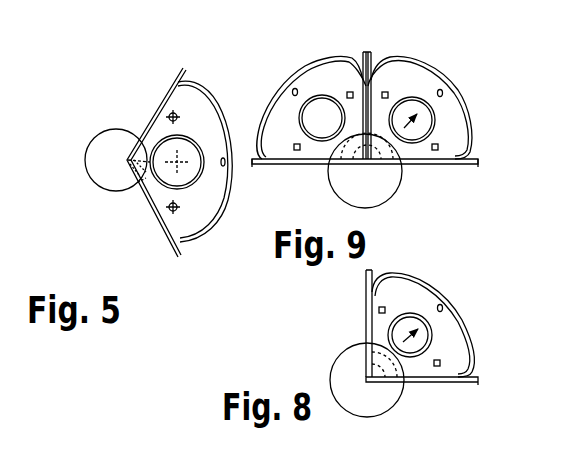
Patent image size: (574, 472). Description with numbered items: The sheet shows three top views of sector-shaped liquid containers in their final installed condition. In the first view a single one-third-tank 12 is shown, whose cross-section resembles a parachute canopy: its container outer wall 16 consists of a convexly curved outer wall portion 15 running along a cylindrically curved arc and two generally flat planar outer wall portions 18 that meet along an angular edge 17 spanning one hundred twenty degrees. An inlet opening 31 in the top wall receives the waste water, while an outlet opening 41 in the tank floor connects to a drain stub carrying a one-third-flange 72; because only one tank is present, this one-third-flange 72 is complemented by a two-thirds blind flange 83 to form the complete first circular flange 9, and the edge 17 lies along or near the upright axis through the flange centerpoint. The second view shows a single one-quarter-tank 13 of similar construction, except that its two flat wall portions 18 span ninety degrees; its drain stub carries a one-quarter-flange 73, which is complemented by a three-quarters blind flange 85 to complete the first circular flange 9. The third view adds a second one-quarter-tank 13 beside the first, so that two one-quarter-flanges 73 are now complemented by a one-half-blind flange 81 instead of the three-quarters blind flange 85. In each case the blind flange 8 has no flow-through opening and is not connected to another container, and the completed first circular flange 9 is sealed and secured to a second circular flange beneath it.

In FIG. 8, the blind flange 8 is at (390, 402).
In FIG. 8, the first circular flange 9 is at (348, 398).
In FIG. 5, the one-third-tank 12 is at (188, 225).
In FIG. 5, the one-quarter-tank 13 is at (205, 161).
In FIG. 9, the one-quarter-tank 13 is at (337, 83).
In FIG. 8, the one-quarter-tank 13 is at (413, 300).
In FIG. 5, the convexly curved outer wall portion 15 is at (222, 203).
In FIG. 9, the convexly curved outer wall portion 15 is at (487, 63).
In FIG. 8, the convexly curved outer wall portion 15 is at (457, 322).
In FIG. 5, the container outer wall 16 is at (155, 110).
In FIG. 9, the container outer wall 16 is at (283, 93).
In FIG. 8, the container outer wall 16 is at (367, 318).
In FIG. 5, the angular edge 17 is at (126, 158).
In FIG. 8, the angular edge 17 is at (362, 382).
In FIG. 5, the flat planar outer wall portion 18 is at (142, 178).
In FIG. 8, the flat planar outer wall portion 18 is at (399, 358).
In FIG. 5, the inlet opening 31 is at (185, 154).
In FIG. 9, the inlet opening 31 is at (420, 128).
In FIG. 8, the inlet opening 31 is at (432, 343).
In FIG. 5, the outlet opening 41 is at (143, 187).
In FIG. 9, the outlet opening 41 is at (337, 160).
In FIG. 8, the outlet opening 41 is at (380, 368).
In FIG. 5, the one-third-flange 72 is at (137, 187).
In FIG. 9, the one-quarter-flange 73 is at (322, 98).
In FIG. 8, the one-quarter-flange 73 is at (408, 378).
In FIG. 9, the one-half-blind flange 81 is at (385, 180).
In FIG. 5, the two-thirds blind flange 83 is at (97, 160).
In FIG. 8, the three-quarters blind flange 85 is at (378, 406).